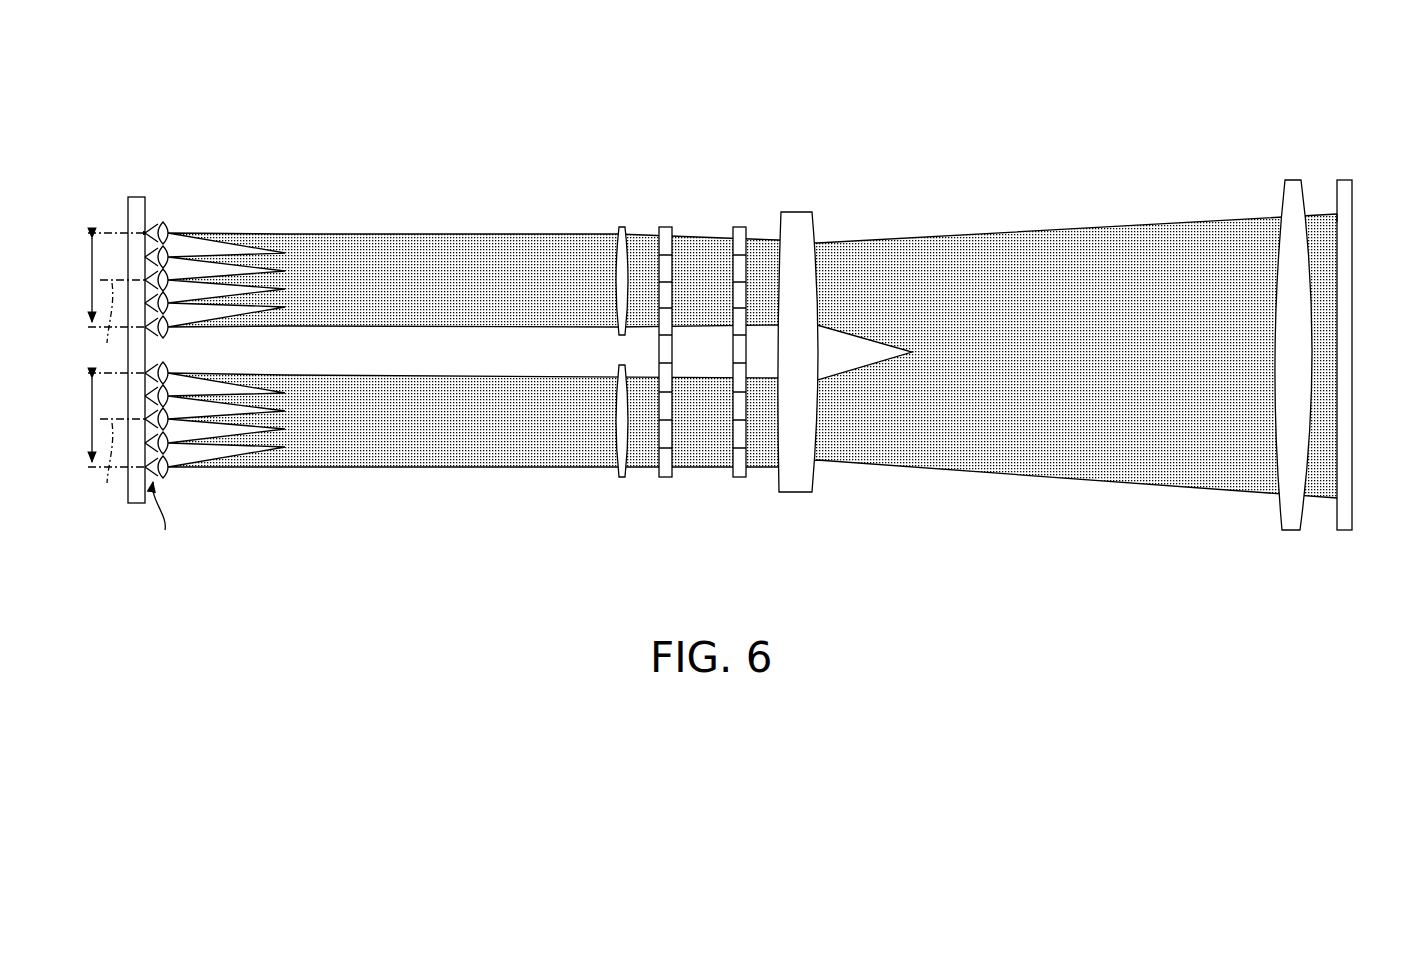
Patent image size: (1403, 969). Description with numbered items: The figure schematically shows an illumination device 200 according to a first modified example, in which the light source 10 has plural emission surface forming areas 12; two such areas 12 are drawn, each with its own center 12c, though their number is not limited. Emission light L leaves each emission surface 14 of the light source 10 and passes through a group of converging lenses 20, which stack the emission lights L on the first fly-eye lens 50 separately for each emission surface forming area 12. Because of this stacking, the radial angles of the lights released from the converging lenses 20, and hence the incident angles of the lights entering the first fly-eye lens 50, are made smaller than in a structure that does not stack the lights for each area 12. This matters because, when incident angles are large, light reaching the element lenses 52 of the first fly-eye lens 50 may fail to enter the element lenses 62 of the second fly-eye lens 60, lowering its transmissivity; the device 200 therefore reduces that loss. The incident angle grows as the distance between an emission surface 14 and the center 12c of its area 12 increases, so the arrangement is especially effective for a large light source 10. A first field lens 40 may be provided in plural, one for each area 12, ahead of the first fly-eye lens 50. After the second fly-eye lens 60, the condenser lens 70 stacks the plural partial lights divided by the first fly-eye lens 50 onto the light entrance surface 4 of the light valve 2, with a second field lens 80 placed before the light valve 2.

The light valve 2 is at (1345, 192).
The light entrance surface 4 is at (1337, 216).
The light source 10 is at (138, 199).
The emission surface forming area 12 is at (106, 350).
The center of the emission surface forming area 12c is at (105, 395).
The emission surface 14 is at (144, 233).
The converging lens 20 is at (163, 221).
The first field lens 40 is at (622, 226).
The first fly-eye lens 50 is at (691, 321).
The element lens of the first fly-eye lens 52 is at (673, 238).
The second fly-eye lens 60 is at (765, 321).
The element lens of the second fly-eye lens 62 is at (747, 238).
The condenser lens 70 is at (797, 220).
The second field lens 80 is at (1291, 195).
The illumination device 200 is at (1292, 66).
The emission light L is at (162, 517).